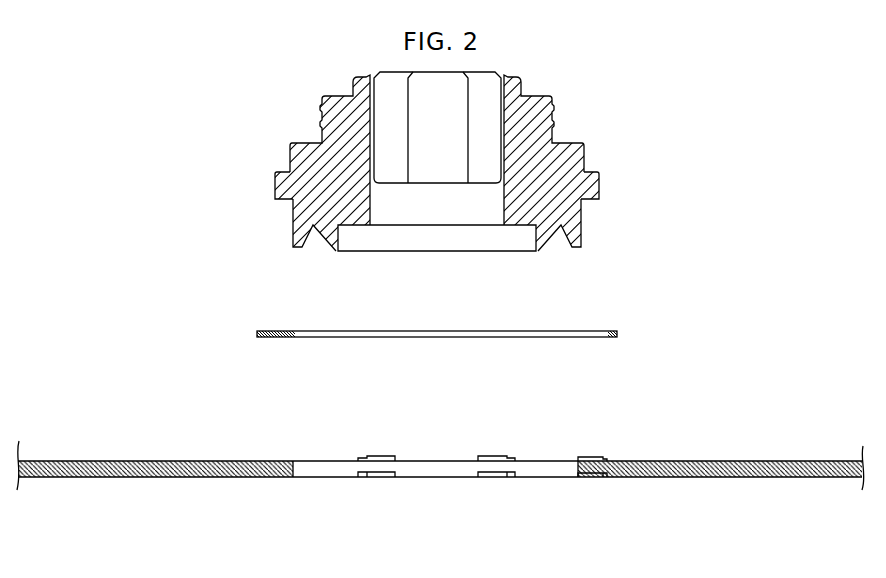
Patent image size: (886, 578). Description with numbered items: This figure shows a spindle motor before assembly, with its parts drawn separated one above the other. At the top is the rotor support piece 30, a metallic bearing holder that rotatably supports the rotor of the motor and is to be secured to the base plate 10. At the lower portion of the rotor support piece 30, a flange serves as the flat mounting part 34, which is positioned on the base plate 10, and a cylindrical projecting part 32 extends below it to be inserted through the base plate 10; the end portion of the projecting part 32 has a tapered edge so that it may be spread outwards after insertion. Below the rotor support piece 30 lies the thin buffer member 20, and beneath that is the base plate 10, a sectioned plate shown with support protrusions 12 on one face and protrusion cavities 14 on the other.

The base plate 10 is at (771, 461).
The support protrusions 12 is at (585, 456).
The protrusion cavities 14 is at (585, 481).
The buffer member 20 is at (613, 336).
The rotor support piece 30 is at (612, 164).
The projecting part 32 is at (293, 231).
The mounting part 34 is at (291, 200).